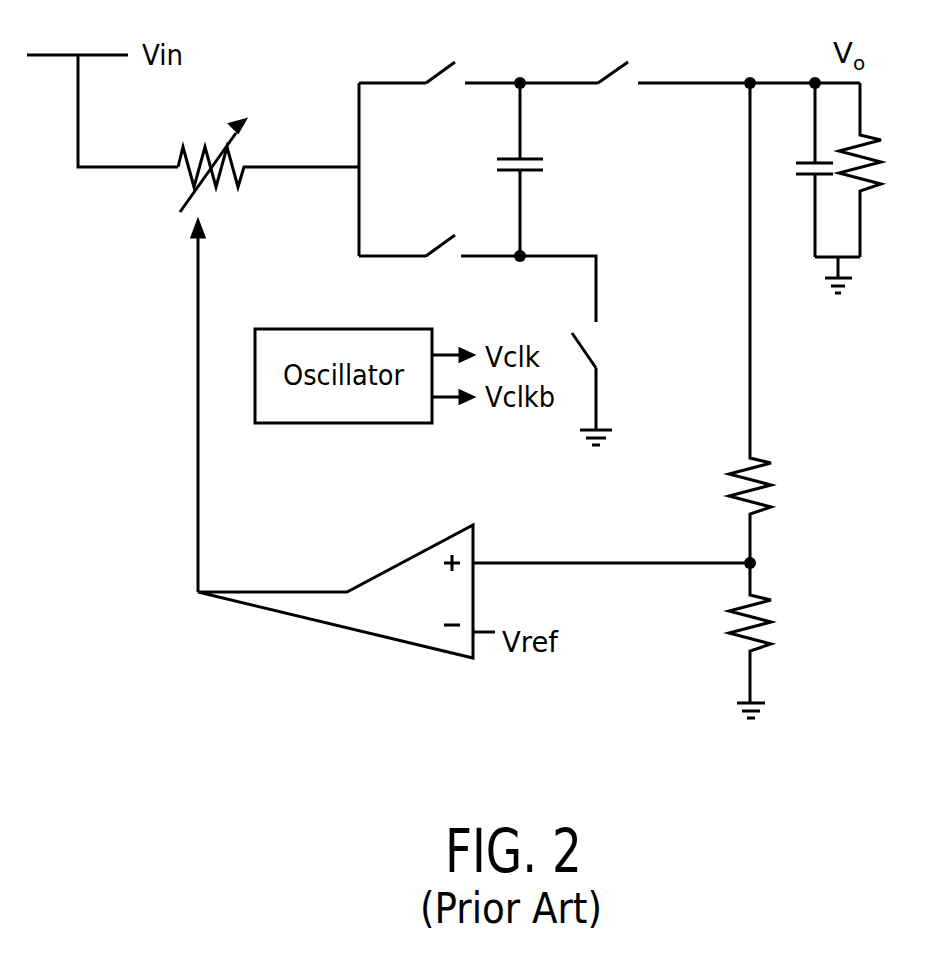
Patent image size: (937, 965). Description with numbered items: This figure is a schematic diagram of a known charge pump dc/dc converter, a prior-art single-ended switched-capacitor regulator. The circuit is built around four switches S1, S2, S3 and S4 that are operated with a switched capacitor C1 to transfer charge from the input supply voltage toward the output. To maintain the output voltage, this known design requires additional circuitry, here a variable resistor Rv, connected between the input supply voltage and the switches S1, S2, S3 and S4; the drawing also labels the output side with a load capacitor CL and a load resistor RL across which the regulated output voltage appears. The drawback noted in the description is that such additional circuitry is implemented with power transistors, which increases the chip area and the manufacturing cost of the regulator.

The switch S1 is at (690, 50).
The switch S2 is at (581, 350).
The switch S3 is at (439, 233).
The switch S4 is at (439, 50).
The flying capacitor C1 is at (544, 169).
The load capacitor CL is at (797, 170).
The load resistor RL is at (880, 170).
The variable resistor Rv is at (268, 166).